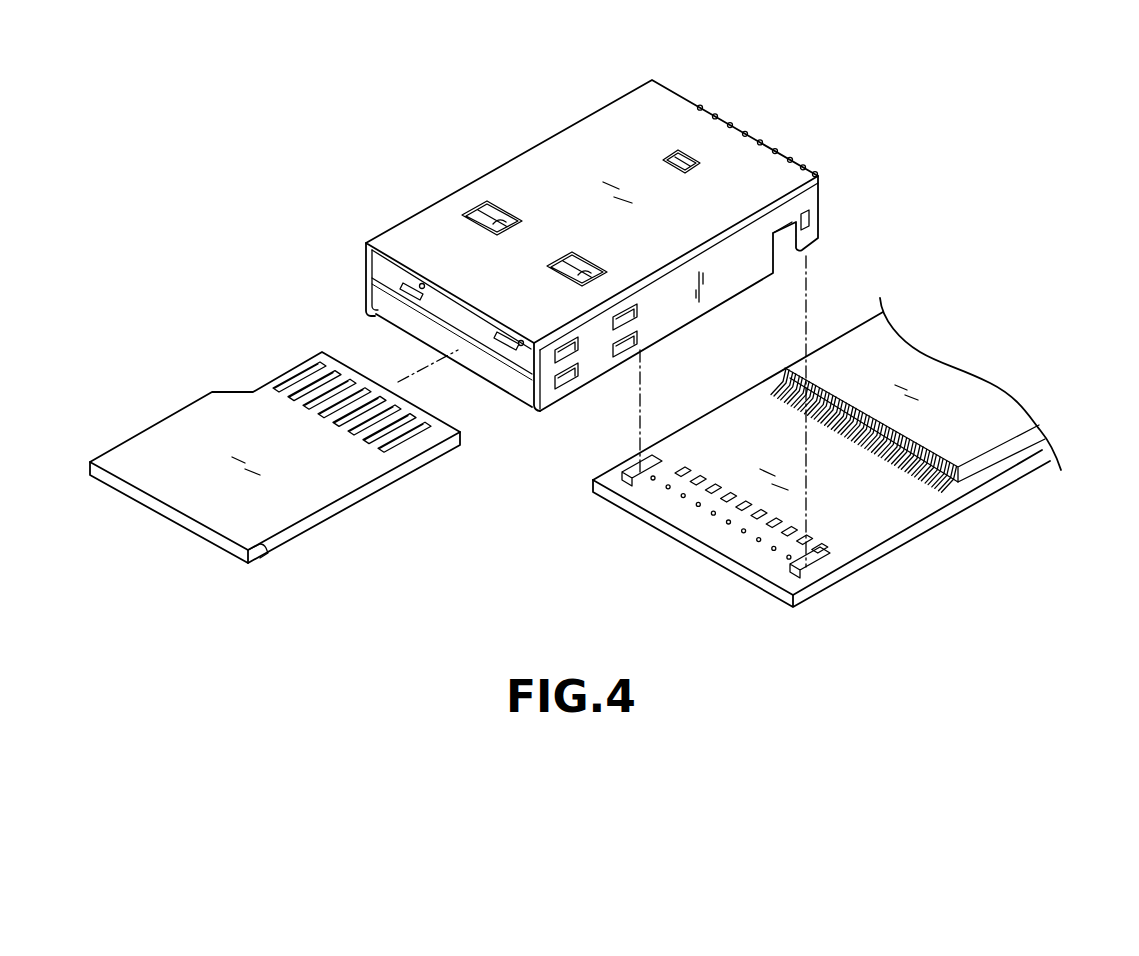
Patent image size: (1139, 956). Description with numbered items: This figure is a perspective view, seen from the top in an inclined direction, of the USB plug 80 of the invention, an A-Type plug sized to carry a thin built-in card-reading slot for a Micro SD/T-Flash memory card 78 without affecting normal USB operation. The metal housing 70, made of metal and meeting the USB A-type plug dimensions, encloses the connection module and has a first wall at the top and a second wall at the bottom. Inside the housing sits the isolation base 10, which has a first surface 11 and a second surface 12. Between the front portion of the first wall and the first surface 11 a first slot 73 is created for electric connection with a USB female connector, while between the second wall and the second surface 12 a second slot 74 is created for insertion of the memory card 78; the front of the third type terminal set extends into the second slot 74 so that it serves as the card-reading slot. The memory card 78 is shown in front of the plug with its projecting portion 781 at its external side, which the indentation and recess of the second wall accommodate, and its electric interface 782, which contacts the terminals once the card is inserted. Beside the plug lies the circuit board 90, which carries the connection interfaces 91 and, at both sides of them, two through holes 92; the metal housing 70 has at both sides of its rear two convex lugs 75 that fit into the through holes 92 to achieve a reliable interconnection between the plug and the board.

The isolation base 10 is at (412, 335).
The first surface 11 is at (372, 268).
The second surface 12 is at (392, 285).
The metal housing 70 is at (541, 160).
The first slot 73 is at (370, 245).
The second slot 74 is at (493, 390).
The convex lug 75 is at (814, 242).
The memory card 78 is at (177, 430).
The projecting portion 781 is at (255, 562).
The electric interface 782 is at (282, 388).
The USB plug 80 is at (605, 14).
The circuit board 90 is at (911, 532).
The connection interfaces 91 is at (774, 549).
The through holes 92 is at (833, 548).